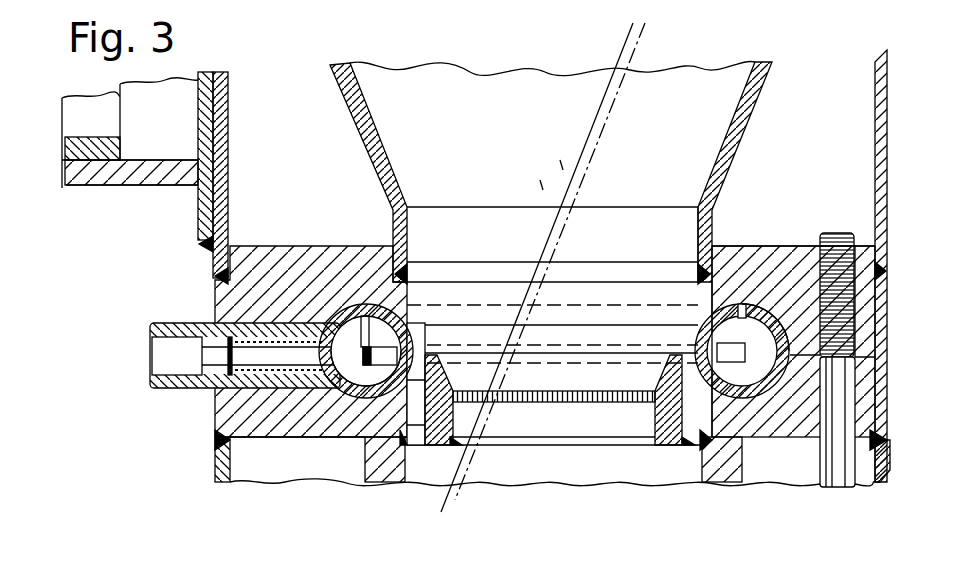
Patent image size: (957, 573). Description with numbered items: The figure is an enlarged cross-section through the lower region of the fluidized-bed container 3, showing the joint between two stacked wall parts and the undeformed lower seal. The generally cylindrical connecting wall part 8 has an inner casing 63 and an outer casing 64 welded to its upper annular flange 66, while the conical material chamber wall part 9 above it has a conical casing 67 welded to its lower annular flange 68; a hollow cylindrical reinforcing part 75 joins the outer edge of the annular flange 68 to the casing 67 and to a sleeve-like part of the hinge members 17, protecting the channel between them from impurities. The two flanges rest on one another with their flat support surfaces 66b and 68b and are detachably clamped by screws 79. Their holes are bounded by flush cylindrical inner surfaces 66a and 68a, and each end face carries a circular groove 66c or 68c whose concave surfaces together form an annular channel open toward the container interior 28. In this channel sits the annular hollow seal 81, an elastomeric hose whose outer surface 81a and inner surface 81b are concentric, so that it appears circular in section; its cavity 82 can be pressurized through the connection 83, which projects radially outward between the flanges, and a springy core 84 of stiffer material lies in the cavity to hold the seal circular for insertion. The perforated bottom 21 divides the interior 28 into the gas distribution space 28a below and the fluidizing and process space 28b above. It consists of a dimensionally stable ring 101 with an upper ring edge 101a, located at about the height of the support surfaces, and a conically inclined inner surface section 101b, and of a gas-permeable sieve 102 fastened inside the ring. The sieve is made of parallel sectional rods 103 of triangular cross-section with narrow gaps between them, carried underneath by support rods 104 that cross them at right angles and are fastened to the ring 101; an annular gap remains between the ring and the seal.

The fluidized-bed container 3 is at (190, 224).
The connecting wall part 8 is at (215, 460).
The material chamber wall part 9 is at (346, 74).
The hinge member 17 is at (135, 188).
The perforated bottom 21 is at (510, 420).
The container interior 28 is at (412, 95).
The gas distribution space 28a is at (514, 468).
The fluidizing and process space 28b is at (467, 92).
The inner casing 63 is at (390, 480).
The outer casing 64 is at (228, 484).
The annular flange 66 is at (779, 437).
The cylindrical inner surface 66a is at (697, 410).
The support surface 66b is at (860, 262).
The annular groove 66c is at (734, 400).
The conical casing 67 is at (768, 64).
The annular flange 68 is at (810, 245).
The cylindrical inner surface 68a is at (700, 310).
The support surface 68b is at (890, 400).
The annular groove 68c is at (757, 302).
The hollow cylindrical reinforcing part 75 is at (868, 64).
The screw 79 is at (840, 487).
The annular hollow seal 81 is at (442, 400).
The outer surface 81a is at (345, 310).
The inner surface 81b is at (362, 316).
The cavity 82 is at (336, 400).
The connection 83 is at (172, 390).
The springy core 84 is at (360, 398).
The ring 101 is at (519, 287).
The upper ring edge 101a is at (427, 325).
The inner surface section 101b is at (487, 450).
The gas-permeable sieve 102 is at (551, 404).
The sectional rod 103 is at (612, 404).
The support rod 104 is at (632, 447).